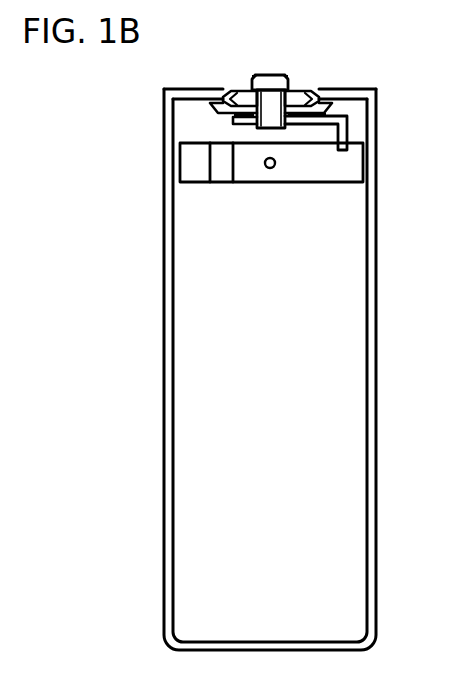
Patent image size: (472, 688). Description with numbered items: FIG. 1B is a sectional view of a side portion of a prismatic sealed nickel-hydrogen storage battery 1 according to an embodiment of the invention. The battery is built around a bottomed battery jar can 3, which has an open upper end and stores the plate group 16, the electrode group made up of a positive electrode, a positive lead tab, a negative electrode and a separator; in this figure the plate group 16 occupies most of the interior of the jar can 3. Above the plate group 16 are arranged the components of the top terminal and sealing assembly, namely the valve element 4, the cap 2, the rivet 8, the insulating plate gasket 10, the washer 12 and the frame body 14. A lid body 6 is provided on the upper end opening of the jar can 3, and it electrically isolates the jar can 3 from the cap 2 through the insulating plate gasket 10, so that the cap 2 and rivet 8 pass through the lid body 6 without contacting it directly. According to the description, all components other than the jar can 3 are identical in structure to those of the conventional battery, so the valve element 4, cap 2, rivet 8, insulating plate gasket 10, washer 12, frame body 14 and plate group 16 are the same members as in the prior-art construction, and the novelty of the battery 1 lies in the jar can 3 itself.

The sealed nickel-hydrogen storage battery 1 is at (397, 71).
The cap 2 is at (273, 74).
The battery jar can 3 is at (376, 462).
The valve element 4 is at (253, 87).
The lid body 6 is at (355, 88).
The rivet 8 is at (297, 96).
The insulating plate gasket 10 is at (322, 96).
The washer 12 is at (342, 148).
The frame body 14 is at (318, 168).
The plate group 16 is at (328, 325).